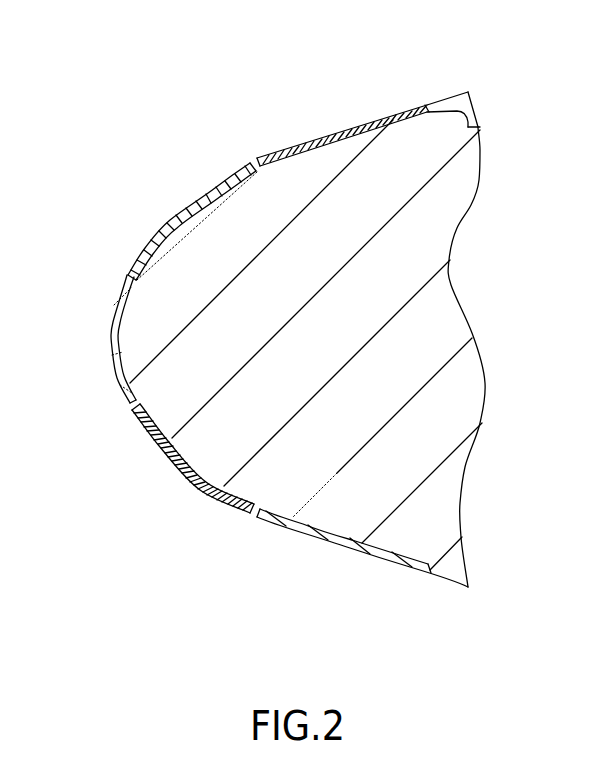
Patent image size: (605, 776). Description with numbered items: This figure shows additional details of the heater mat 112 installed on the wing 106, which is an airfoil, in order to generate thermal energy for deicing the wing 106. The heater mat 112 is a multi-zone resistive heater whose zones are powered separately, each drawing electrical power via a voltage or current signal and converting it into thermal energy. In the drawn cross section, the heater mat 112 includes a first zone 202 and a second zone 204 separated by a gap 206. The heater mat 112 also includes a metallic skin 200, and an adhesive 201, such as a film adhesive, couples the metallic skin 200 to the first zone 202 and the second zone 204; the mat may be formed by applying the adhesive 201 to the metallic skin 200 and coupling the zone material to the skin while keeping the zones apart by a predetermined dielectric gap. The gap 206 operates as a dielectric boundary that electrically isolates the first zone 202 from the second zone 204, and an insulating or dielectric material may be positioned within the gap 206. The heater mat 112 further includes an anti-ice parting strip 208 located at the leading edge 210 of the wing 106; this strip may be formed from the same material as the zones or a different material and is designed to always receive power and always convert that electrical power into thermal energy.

The heater mat 112 is at (168, 194).
The wing 106 is at (355, 338).
The metallic skin 200 is at (452, 93).
The adhesive 201 is at (480, 127).
The first zone 202 is at (142, 254).
The second zone 204 is at (380, 110).
The gap 206 is at (253, 160).
The anti-ice parting strip 208 is at (113, 333).
The leading edge 210 is at (115, 380).